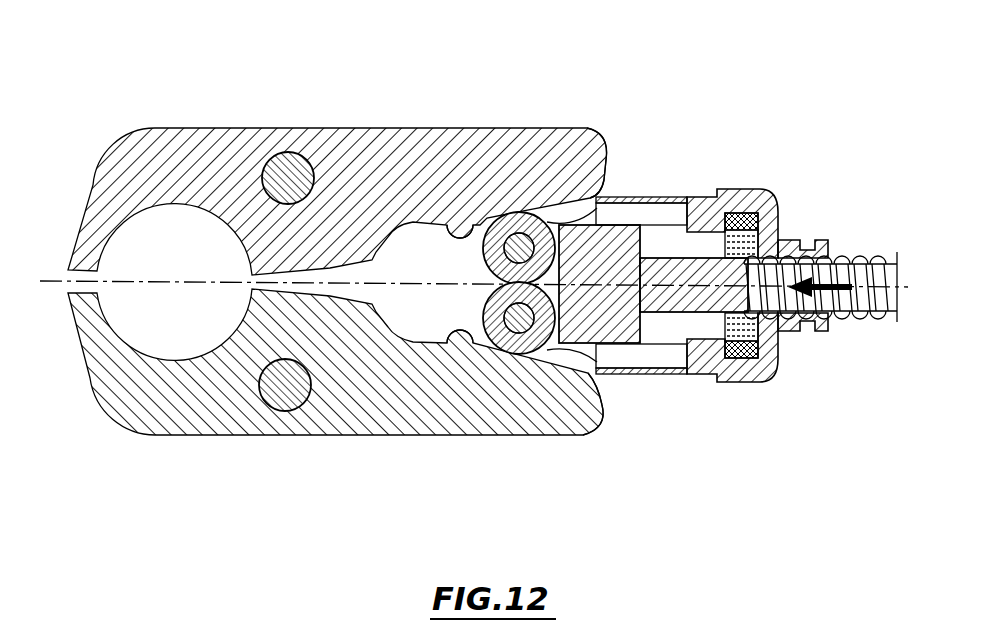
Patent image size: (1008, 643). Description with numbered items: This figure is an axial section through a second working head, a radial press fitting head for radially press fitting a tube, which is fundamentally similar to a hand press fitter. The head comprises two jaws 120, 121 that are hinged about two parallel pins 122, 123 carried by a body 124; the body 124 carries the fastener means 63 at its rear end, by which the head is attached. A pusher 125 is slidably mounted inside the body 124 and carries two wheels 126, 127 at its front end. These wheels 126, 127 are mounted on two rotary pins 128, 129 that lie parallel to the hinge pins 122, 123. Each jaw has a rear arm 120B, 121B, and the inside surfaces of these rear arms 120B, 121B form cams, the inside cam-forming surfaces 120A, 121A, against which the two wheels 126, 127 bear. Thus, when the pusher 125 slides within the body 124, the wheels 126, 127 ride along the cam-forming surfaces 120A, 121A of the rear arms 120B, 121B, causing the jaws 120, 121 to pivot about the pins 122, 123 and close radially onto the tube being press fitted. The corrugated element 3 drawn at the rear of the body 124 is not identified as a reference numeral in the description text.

The jaw 120 is at (128, 122).
The jaw 121 is at (115, 441).
The pin 122 is at (283, 180).
The pin 123 is at (280, 387).
The inside cam-forming surface 120A is at (447, 228).
The inside cam-forming surface 121A is at (430, 342).
The rear arm 120B is at (576, 150).
The rear arm 121B is at (596, 425).
The rotary pin 128 is at (512, 240).
The rotary pin 129 is at (515, 352).
The wheel 127 is at (565, 350).
The pusher 125 is at (690, 300).
The wheel 126 is at (600, 206).
The body 124 is at (697, 200).
The fastener means 63 is at (826, 215).
The corrugated hose 3 is at (838, 318).